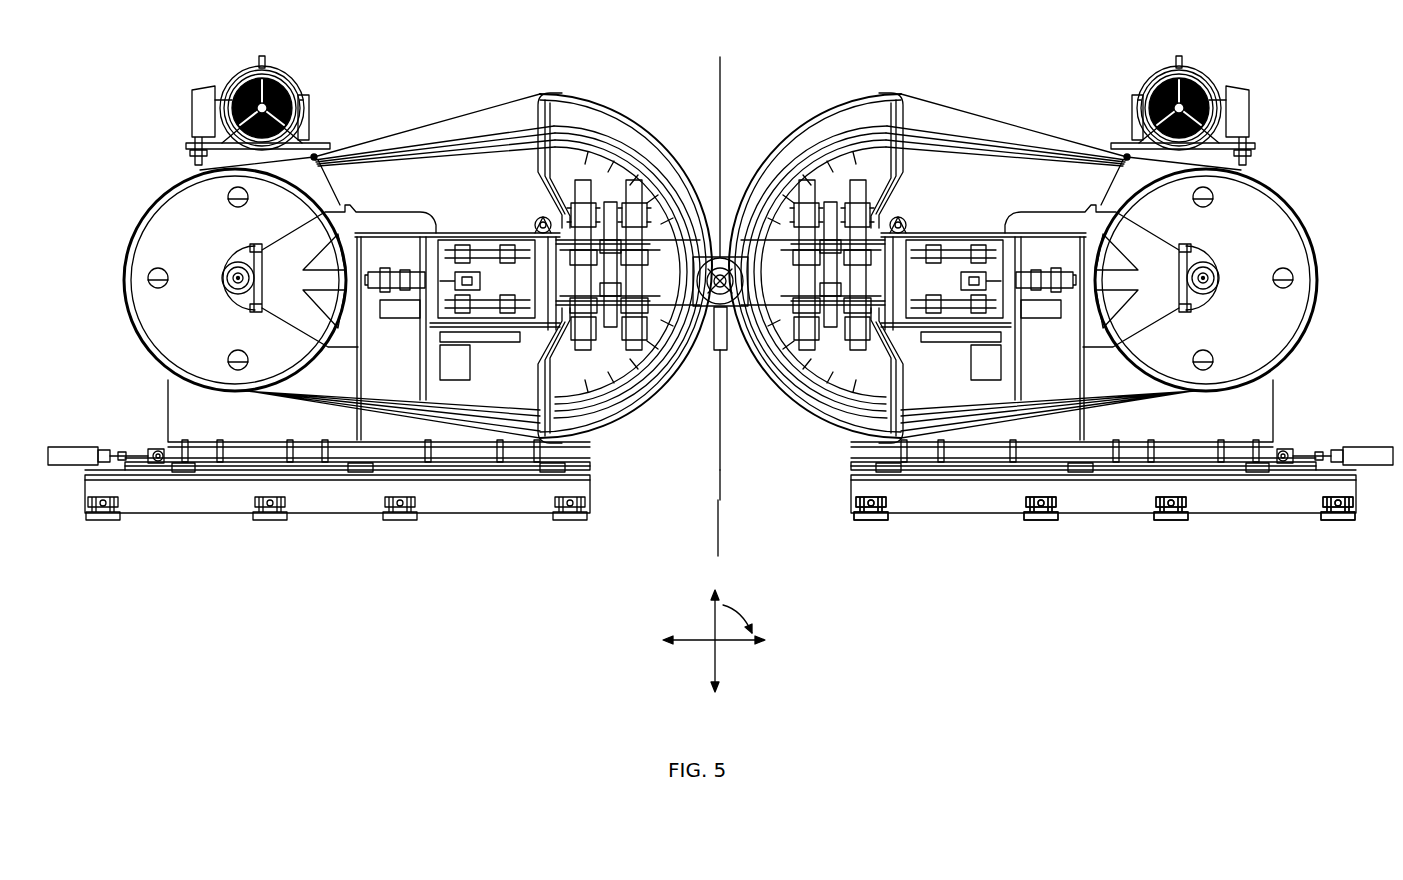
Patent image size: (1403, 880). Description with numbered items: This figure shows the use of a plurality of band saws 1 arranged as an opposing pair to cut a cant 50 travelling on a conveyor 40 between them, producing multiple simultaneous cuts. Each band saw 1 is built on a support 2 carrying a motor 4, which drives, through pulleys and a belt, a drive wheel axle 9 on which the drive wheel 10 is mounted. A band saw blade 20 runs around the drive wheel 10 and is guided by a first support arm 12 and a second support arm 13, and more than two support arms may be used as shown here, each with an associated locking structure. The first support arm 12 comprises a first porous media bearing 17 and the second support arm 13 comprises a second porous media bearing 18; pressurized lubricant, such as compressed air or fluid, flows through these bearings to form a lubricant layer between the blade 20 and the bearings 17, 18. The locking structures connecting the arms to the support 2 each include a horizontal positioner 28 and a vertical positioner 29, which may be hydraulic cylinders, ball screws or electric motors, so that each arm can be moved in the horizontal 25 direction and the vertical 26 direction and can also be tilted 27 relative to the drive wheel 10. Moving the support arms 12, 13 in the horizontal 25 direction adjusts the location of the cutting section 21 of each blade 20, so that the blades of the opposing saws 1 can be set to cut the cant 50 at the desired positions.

The band saw 1 is at (950, 515).
The support 2 is at (1085, 515).
The motor 4 is at (1148, 84).
The drive wheel axle 9 is at (232, 270).
The drive wheel 10 is at (300, 176).
The first support arm 12 is at (568, 152).
The second support arm 13 is at (568, 355).
The first porous media bearing 17 is at (620, 147).
The second porous media bearing 18 is at (613, 437).
The band saw blade 20 is at (975, 108).
The cutting section 21 is at (728, 500).
The horizontal direction 25 is at (683, 640).
The vertical direction 26 is at (715, 626).
The tilt 27 is at (742, 617).
The horizontal positioner 28 is at (385, 292).
The vertical positioner 29 is at (853, 178).
The conveyor 40 is at (718, 553).
The cant 50 is at (720, 57).